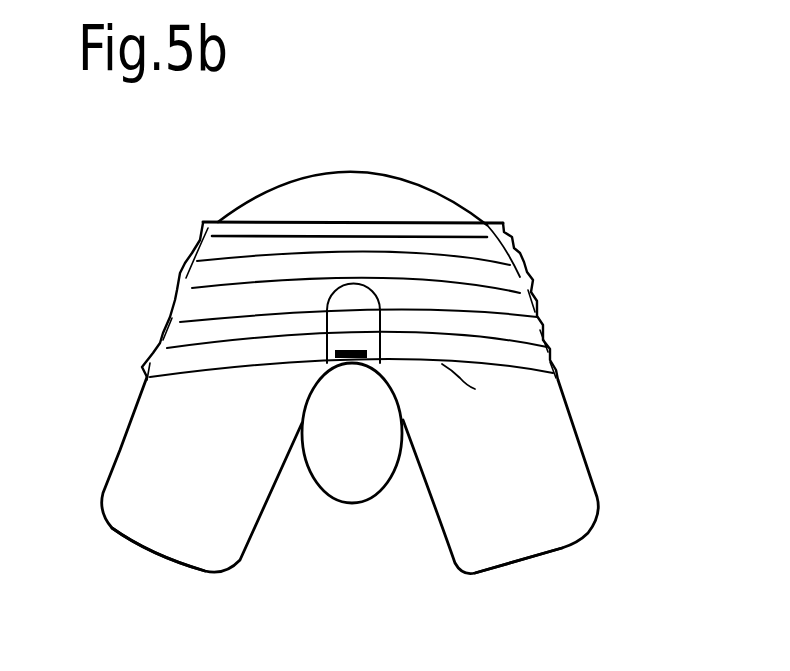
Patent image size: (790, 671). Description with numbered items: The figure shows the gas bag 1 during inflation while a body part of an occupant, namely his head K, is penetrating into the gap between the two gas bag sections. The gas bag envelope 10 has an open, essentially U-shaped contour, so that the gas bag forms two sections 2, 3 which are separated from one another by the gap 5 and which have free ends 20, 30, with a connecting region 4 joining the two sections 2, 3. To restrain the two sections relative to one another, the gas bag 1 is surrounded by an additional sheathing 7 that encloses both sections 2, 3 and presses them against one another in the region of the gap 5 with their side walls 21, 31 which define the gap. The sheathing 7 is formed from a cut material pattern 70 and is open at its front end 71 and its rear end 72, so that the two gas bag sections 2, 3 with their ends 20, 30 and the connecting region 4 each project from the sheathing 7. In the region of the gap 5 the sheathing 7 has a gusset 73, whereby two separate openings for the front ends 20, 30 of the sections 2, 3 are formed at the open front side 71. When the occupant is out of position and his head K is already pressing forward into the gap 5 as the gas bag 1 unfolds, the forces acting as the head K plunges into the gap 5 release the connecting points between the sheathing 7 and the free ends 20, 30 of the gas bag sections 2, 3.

The gas bag 1 is at (358, 149).
The gas bag section 2 is at (158, 458).
The gas bag section 3 is at (540, 483).
The connecting region 4 is at (405, 197).
The gap 5 is at (337, 357).
The sheathing 7 is at (527, 240).
The gas bag envelope 10 is at (276, 180).
The free end 20 is at (173, 535).
The side wall 21 is at (327, 317).
The free end 30 is at (530, 533).
The side wall 31 is at (380, 322).
The cut material pattern 70 is at (182, 265).
The front end of the sheathing 71 is at (475, 389).
The rear end of the sheathing 72 is at (432, 222).
The gusset 73 is at (365, 350).
The head K is at (363, 483).